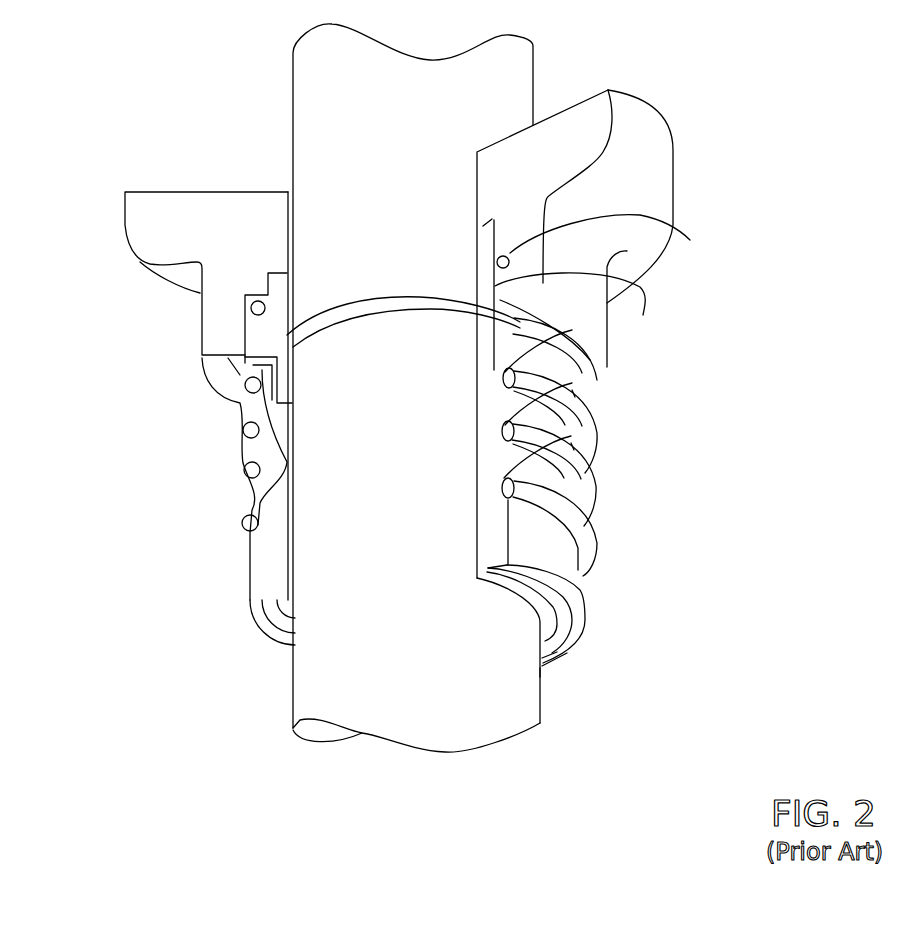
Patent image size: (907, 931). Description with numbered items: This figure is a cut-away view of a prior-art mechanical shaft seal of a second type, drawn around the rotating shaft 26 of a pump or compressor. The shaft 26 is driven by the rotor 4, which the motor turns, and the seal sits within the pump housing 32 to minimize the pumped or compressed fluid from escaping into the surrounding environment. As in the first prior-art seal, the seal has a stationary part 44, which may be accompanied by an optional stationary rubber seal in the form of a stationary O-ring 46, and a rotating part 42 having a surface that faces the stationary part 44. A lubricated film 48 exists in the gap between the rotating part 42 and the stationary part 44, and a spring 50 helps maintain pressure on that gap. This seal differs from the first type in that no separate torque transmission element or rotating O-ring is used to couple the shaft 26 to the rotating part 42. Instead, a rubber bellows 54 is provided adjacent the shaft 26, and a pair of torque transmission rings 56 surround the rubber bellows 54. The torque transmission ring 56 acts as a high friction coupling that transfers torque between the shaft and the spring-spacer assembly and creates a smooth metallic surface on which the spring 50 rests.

The rotor 4 is at (290, 709).
The rotating shaft 26 is at (364, 193).
The pump housing 32 is at (140, 230).
The lubricated film 48 is at (290, 345).
The stationary part 44 is at (612, 282).
The stationary O-ring 46 is at (688, 238).
The rotating part 42 is at (593, 377).
The spring 50 is at (603, 403).
The torque transmission rings 56 is at (593, 455).
The rubber bellows 54 is at (577, 573).